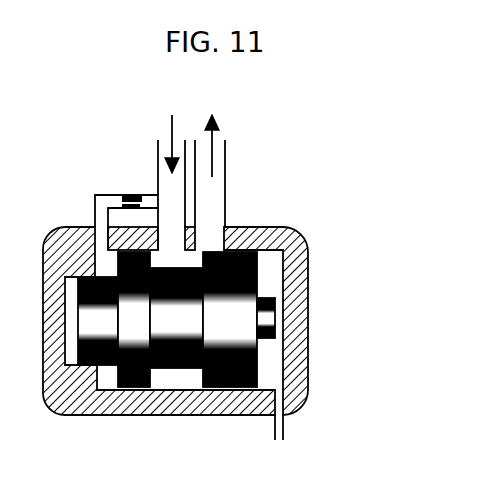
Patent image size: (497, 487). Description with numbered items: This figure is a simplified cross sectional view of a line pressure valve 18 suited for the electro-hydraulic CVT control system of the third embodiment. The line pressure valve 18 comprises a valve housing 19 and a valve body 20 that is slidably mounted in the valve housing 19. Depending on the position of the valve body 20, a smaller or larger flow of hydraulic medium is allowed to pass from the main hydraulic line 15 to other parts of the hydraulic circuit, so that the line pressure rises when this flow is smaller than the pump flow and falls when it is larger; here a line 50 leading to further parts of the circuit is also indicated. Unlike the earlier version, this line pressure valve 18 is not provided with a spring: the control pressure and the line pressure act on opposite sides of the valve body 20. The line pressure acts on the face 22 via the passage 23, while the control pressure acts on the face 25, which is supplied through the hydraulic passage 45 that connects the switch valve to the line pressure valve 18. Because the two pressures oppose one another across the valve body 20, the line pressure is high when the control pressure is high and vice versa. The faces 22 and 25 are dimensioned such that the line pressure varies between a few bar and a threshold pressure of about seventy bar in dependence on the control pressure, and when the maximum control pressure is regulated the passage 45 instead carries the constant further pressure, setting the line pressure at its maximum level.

The main hydraulic line 15 is at (157, 157).
The line pressure valve 18 is at (284, 155).
The valve housing 19 is at (295, 236).
The valve body 20 is at (248, 226).
The face 22 is at (113, 373).
The passage 23 is at (95, 211).
The face 25 is at (258, 281).
The hydraulic passage 45 is at (284, 415).
The line 50 is at (225, 156).